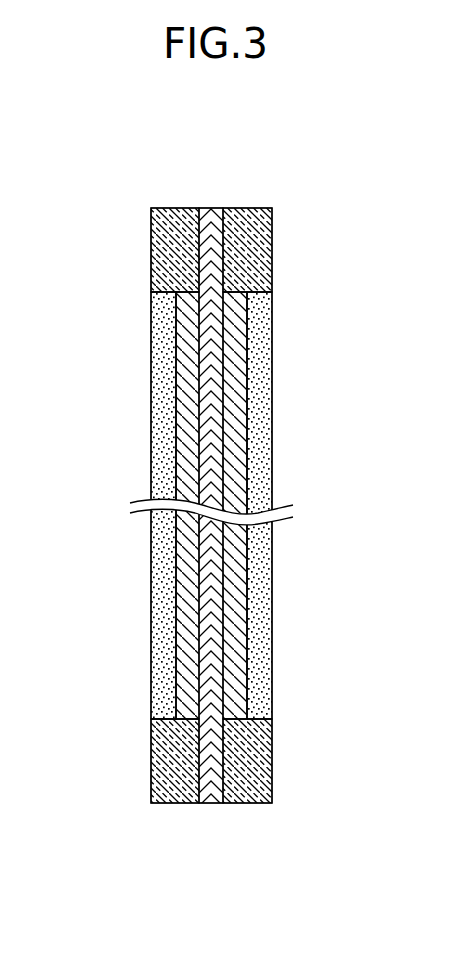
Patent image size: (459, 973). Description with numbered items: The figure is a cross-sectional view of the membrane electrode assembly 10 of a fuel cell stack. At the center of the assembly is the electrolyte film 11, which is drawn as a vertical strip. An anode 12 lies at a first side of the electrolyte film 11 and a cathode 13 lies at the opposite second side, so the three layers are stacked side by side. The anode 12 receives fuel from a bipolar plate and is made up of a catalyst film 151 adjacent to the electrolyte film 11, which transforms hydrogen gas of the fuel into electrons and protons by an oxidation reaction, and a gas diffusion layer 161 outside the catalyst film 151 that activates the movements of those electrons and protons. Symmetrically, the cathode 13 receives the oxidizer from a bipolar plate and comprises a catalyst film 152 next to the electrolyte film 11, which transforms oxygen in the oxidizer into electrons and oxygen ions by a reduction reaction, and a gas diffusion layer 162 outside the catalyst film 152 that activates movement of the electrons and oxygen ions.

The membrane electrode assembly 10 is at (237, 505).
The electrolyte film 11 is at (213, 403).
The anode 12 is at (73, 580).
The cathode 13 is at (350, 557).
The catalyst film 151 is at (188, 582).
The gas diffusion layer 161 is at (163, 619).
The catalyst film 152 is at (238, 562).
The gas diffusion layer 162 is at (263, 598).